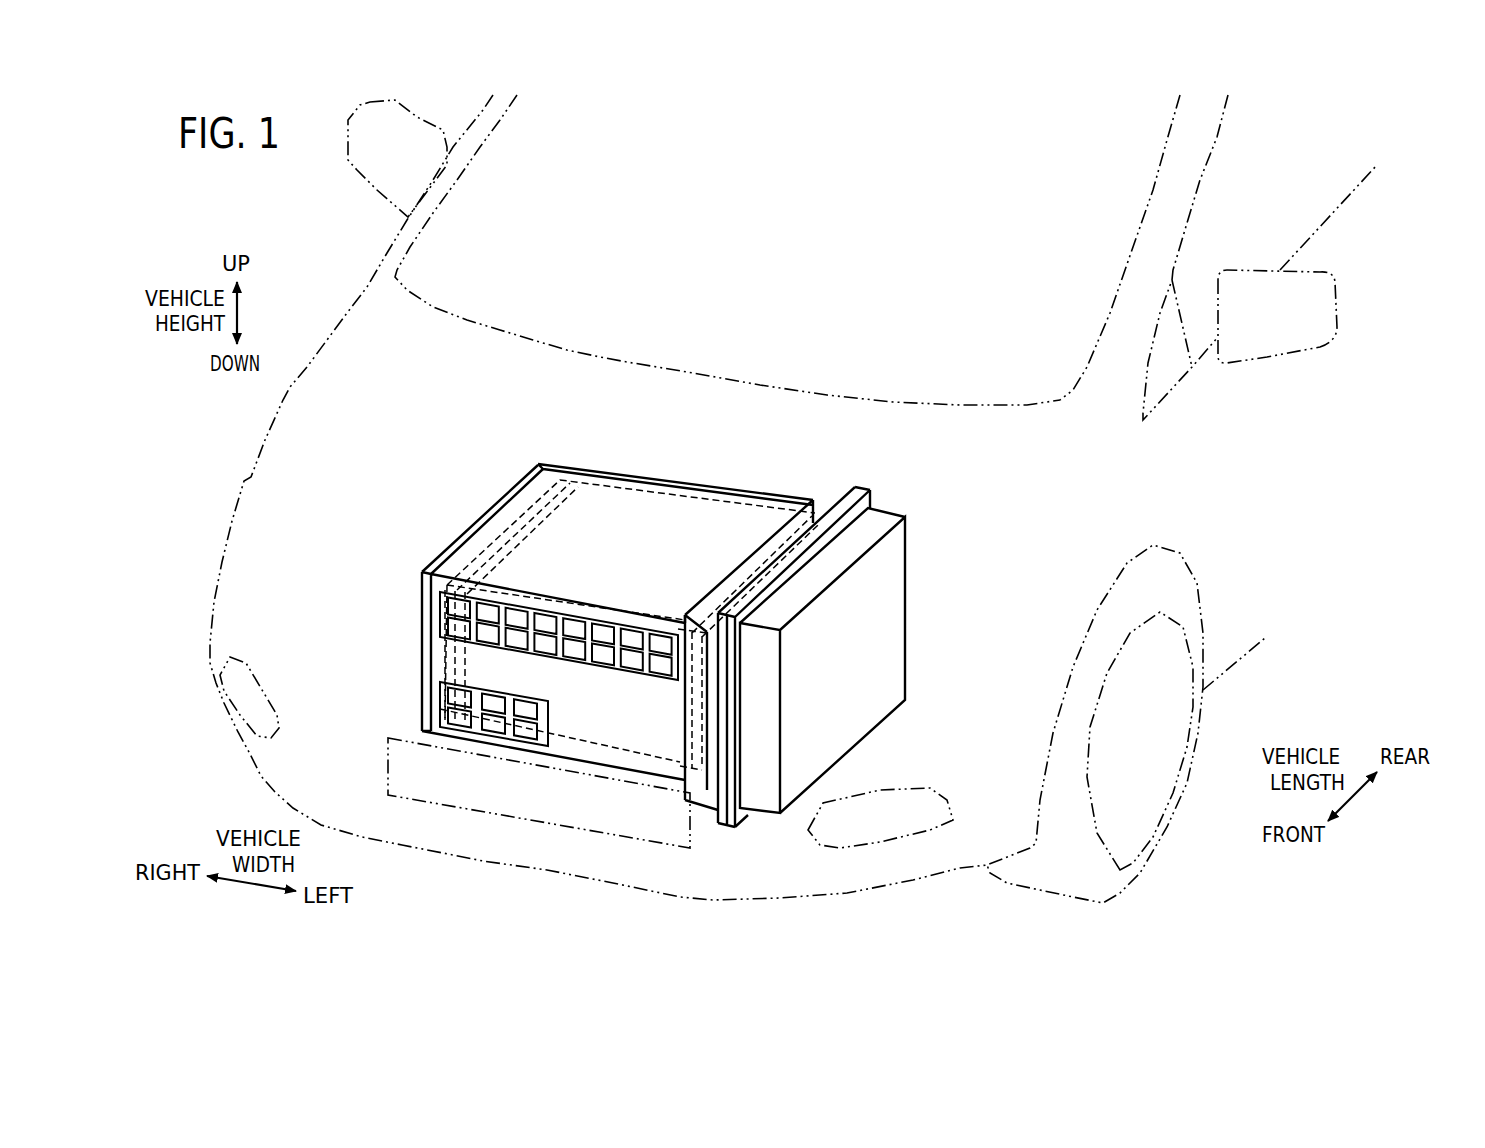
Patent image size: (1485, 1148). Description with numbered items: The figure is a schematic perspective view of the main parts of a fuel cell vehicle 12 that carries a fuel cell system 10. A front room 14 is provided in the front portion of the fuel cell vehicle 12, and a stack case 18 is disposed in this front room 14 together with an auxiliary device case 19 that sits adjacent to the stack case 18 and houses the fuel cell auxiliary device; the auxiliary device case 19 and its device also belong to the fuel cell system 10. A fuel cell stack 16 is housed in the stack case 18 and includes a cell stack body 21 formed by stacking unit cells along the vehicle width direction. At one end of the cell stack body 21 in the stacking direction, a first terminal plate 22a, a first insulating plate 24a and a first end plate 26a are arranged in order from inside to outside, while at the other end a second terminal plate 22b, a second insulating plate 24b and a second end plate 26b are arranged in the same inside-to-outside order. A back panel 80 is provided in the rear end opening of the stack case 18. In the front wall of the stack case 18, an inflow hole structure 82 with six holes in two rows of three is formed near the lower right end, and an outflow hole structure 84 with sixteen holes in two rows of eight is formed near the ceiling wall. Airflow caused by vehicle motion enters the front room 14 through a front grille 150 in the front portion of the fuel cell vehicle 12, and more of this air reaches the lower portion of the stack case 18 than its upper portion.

The fuel cell system 10 is at (496, 460).
The fuel cell vehicle 12 is at (277, 212).
The front room 14 is at (690, 393).
The fuel cell stack 16 is at (629, 489).
The stack case 18 is at (684, 485).
The auxiliary device case 19 is at (890, 597).
The cell stack body 21 is at (597, 512).
The first terminal plate 22a is at (685, 697).
The second terminal plate 22b is at (443, 643).
The first insulating plate 24a is at (685, 727).
The second insulating plate 24b is at (443, 663).
The first end plate 26a is at (707, 787).
The second end plate 26b is at (424, 584).
The back panel 80 is at (733, 493).
The inflow hole structure 82 is at (488, 740).
The outflow hole structure 84 is at (546, 612).
The front grille 150 is at (402, 766).